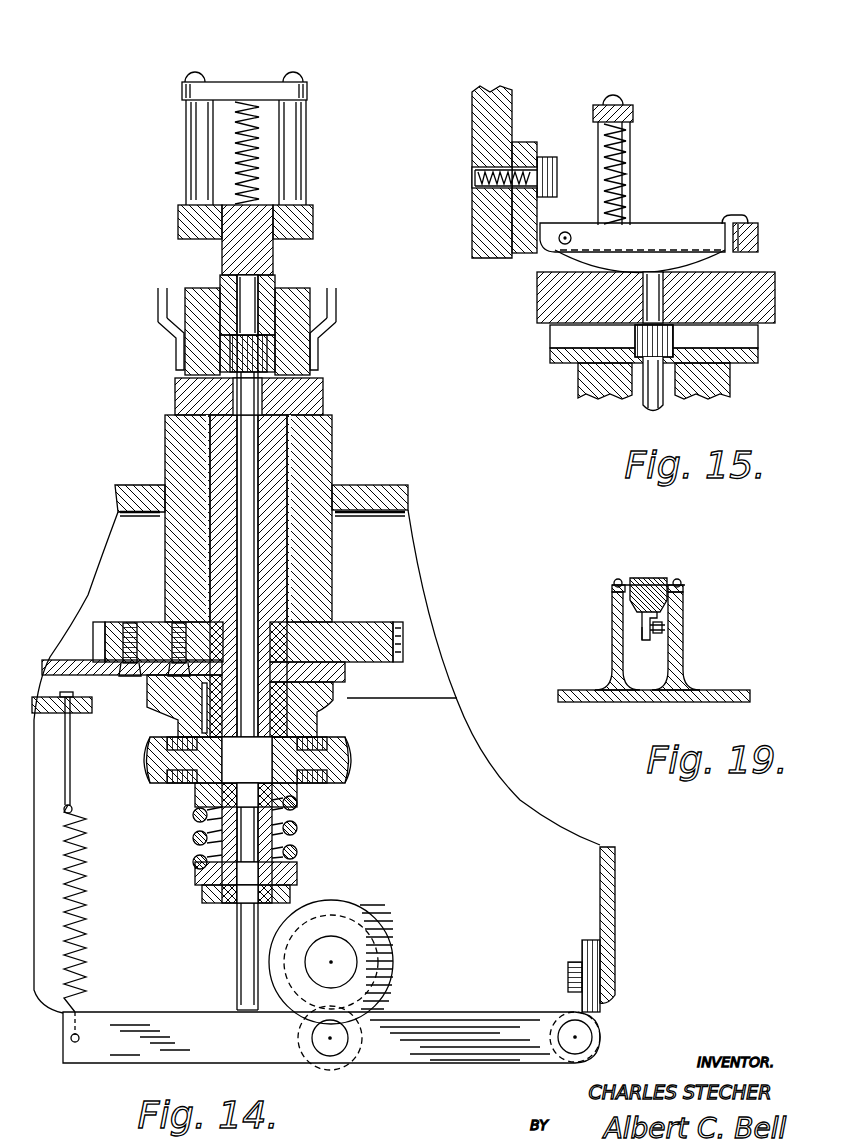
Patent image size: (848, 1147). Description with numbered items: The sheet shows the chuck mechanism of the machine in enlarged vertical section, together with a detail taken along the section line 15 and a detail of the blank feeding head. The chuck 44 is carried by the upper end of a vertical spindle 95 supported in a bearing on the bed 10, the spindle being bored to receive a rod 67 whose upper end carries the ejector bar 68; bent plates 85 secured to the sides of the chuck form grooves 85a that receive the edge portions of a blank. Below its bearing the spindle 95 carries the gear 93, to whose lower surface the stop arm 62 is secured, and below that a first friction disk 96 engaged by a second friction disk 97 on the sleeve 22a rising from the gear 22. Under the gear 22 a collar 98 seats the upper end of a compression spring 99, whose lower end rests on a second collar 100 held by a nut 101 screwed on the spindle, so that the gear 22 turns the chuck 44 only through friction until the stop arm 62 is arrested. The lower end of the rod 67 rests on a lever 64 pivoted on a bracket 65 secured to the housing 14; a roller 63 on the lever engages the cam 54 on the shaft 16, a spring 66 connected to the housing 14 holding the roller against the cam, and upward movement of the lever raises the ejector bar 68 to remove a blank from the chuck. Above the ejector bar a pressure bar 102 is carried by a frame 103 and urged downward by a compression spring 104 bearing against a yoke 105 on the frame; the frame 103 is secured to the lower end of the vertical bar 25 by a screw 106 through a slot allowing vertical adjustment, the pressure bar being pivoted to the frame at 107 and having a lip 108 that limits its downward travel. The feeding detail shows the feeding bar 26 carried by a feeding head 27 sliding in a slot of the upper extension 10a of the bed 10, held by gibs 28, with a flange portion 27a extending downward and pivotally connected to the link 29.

In FIG. 14, the bed 10 is at (382, 486).
In FIG. 19, the bed 10 is at (726, 690).
In FIG. 19, the upper extension of the bed 10a is at (684, 656).
In FIG. 14, the housing 14 is at (613, 908).
In FIG. 14, the section line 15— 15 is at (247, 82).
In FIG. 14, the shaft 16 is at (338, 957).
In FIG. 14, the gear 22 is at (340, 785).
In FIG. 14, the sleeve 22a is at (310, 737).
In FIG. 15, the vertical bar 25 is at (505, 112).
In FIG. 19, the feeding bar 26 is at (655, 580).
In FIG. 19, the feeding head 27 is at (664, 614).
In FIG. 19, the flange portion 27a is at (642, 630).
In FIG. 19, the gibs 28 is at (612, 591).
In FIG. 19, the link 29 is at (657, 635).
In FIG. 14, the chuck 44 is at (297, 286).
In FIG. 15, the chuck 44 is at (759, 355).
In FIG. 14, the cam 54 is at (366, 918).
In FIG. 14, the stop arm 62 is at (58, 661).
In FIG. 14, the roller 63 is at (340, 1063).
In FIG. 14, the lever 64 is at (457, 1022).
In FIG. 14, the bracket 65 is at (600, 1011).
In FIG. 14, the spring 66 is at (88, 928).
In FIG. 14, the rod 67 is at (259, 452).
In FIG. 15, the rod 67 is at (661, 405).
In FIG. 14, the ejector bar 68 is at (221, 281).
In FIG. 15, the ejector bar 68 is at (776, 284).
In FIG. 14, the bent plates 85 is at (158, 306).
In FIG. 14, the grooves 85a is at (160, 292).
In FIG. 14, the gear 93 is at (360, 626).
In FIG. 14, the spindle 95 is at (176, 395).
In FIG. 15, the spindle 95 is at (731, 385).
In FIG. 14, the first friction disk 96 is at (346, 672).
In FIG. 14, the second friction disk 97 is at (333, 710).
In FIG. 14, the collar 98 is at (196, 795).
In FIG. 14, the compression spring 99 is at (193, 838).
In FIG. 14, the second collar 100 is at (195, 876).
In FIG. 14, the nut 101 is at (203, 902).
In FIG. 14, the pressure bar 102 is at (224, 250).
In FIG. 15, the pressure bar 102 is at (648, 234).
In FIG. 14, the frame 103 is at (183, 222).
In FIG. 15, the frame 103 is at (759, 240).
In FIG. 14, the compression spring 104 is at (240, 139).
In FIG. 15, the compression spring 104 is at (626, 160).
In FIG. 14, the yoke 105 is at (300, 108).
In FIG. 15, the yoke 105 is at (630, 140).
In FIG. 15, the screw 106 is at (550, 158).
In FIG. 15, the pivot 107 is at (565, 231).
In FIG. 15, the lip 108 is at (742, 215).